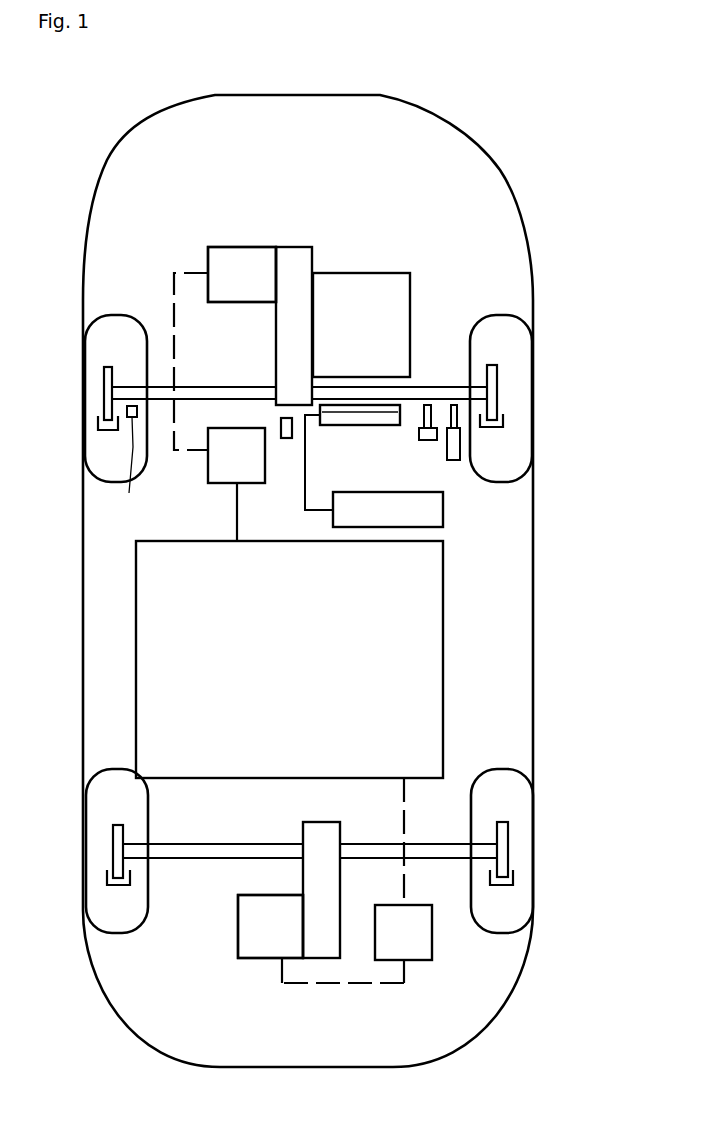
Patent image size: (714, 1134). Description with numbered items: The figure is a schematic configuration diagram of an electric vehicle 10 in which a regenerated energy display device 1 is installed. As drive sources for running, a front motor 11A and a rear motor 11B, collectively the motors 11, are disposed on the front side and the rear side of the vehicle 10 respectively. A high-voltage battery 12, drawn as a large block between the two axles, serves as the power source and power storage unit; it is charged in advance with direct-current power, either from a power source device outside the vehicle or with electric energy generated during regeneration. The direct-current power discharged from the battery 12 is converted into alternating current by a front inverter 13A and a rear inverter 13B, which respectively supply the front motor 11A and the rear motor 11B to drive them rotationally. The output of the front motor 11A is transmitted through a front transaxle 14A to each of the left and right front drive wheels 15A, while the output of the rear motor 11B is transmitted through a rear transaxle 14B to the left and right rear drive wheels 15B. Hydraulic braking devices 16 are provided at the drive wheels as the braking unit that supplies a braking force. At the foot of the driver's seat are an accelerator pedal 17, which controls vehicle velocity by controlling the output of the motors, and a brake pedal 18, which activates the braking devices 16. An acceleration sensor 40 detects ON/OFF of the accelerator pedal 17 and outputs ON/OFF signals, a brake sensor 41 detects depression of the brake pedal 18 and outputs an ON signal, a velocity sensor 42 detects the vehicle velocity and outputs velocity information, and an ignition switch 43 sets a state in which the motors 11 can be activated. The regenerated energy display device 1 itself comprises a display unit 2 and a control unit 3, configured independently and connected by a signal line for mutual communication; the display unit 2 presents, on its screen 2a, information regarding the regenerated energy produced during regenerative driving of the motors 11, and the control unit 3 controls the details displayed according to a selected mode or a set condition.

The regenerated energy display device 1 is at (295, 467).
The display unit 2 is at (346, 405).
The screen 2a is at (365, 426).
The control unit 3 is at (443, 511).
The electric vehicle 10 is at (310, 116).
The motors 11 is at (215, 607).
The front motor 11A is at (212, 337).
The rear motor 11B is at (238, 952).
The high-voltage battery 12 is at (305, 629).
The front inverter 13A is at (208, 477).
The rear inverter 13B is at (432, 946).
The front transaxle 14A is at (296, 250).
The rear transaxle 14B is at (322, 945).
The front drive wheels 15A is at (88, 402).
The rear drive wheels 15B is at (95, 855).
The hydraulic braking devices 16 is at (97, 383).
The accelerator pedal 17 is at (460, 432).
The brake pedal 18 is at (434, 441).
The acceleration sensor 40 is at (453, 405).
The brake sensor 41 is at (428, 405).
The velocity sensor 42 is at (131, 464).
The ignition switch 43 is at (281, 426).